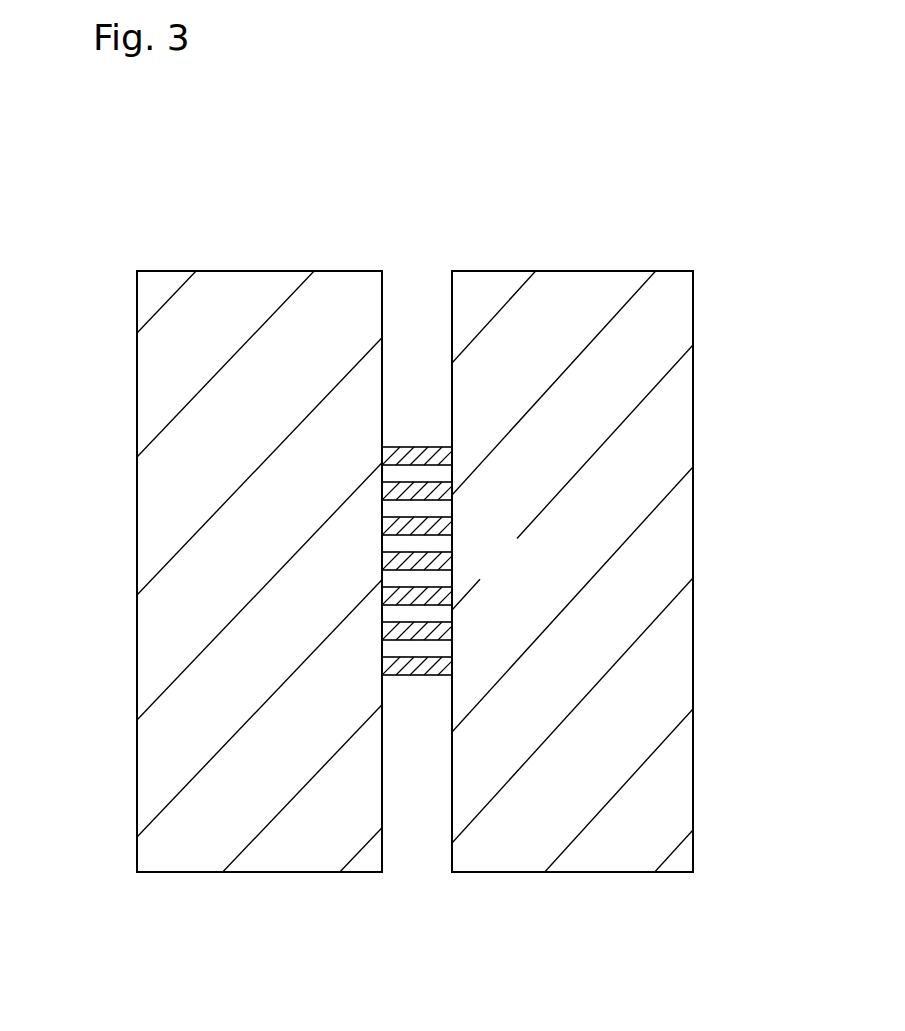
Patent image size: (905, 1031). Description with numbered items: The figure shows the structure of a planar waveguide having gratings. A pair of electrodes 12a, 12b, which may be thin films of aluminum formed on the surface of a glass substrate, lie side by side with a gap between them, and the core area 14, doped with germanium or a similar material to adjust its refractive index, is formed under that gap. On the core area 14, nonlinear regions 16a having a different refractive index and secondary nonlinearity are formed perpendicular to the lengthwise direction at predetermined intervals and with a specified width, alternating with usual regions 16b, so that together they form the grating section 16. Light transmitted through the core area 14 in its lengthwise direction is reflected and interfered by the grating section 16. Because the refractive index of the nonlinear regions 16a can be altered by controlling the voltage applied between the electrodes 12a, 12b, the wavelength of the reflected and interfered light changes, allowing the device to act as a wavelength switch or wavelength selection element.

The electrode 12a is at (155, 615).
The electrode 12b is at (677, 653).
The core area 14 is at (418, 288).
The grating section 16 is at (462, 440).
The nonlinear region 16a is at (407, 447).
The usual region 16b is at (388, 477).